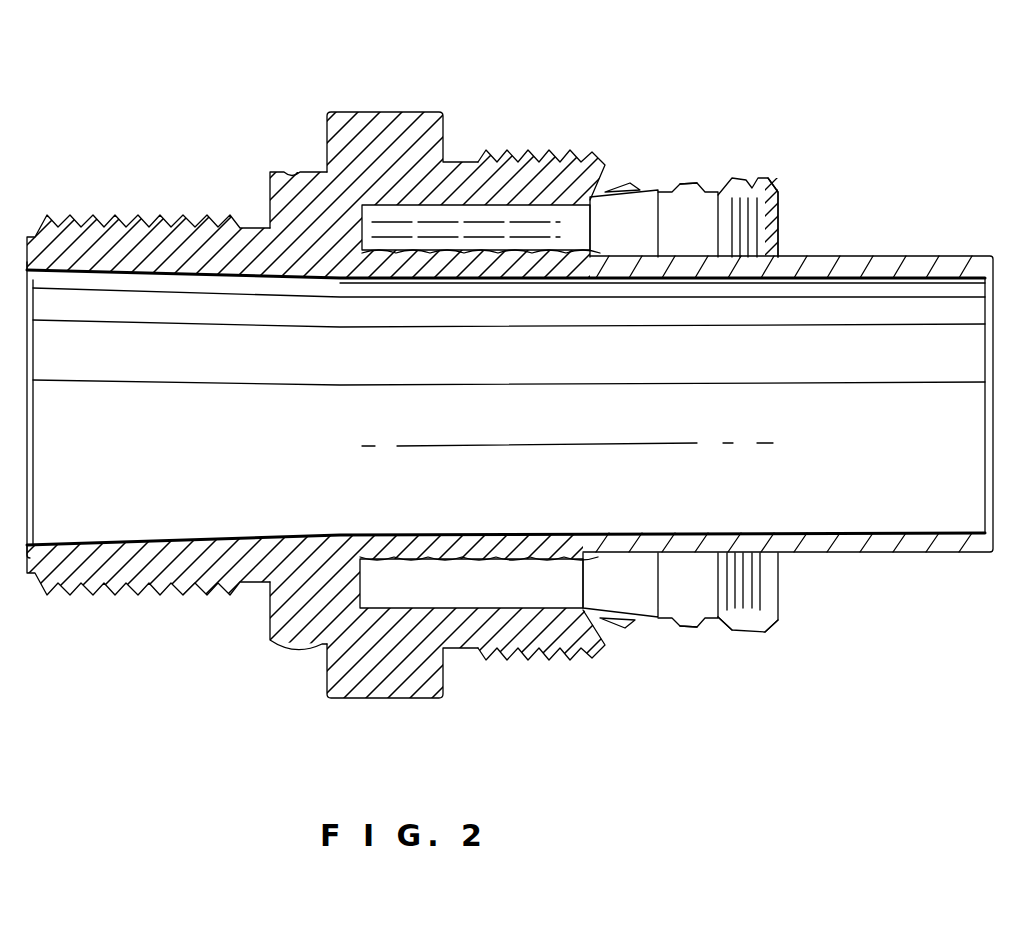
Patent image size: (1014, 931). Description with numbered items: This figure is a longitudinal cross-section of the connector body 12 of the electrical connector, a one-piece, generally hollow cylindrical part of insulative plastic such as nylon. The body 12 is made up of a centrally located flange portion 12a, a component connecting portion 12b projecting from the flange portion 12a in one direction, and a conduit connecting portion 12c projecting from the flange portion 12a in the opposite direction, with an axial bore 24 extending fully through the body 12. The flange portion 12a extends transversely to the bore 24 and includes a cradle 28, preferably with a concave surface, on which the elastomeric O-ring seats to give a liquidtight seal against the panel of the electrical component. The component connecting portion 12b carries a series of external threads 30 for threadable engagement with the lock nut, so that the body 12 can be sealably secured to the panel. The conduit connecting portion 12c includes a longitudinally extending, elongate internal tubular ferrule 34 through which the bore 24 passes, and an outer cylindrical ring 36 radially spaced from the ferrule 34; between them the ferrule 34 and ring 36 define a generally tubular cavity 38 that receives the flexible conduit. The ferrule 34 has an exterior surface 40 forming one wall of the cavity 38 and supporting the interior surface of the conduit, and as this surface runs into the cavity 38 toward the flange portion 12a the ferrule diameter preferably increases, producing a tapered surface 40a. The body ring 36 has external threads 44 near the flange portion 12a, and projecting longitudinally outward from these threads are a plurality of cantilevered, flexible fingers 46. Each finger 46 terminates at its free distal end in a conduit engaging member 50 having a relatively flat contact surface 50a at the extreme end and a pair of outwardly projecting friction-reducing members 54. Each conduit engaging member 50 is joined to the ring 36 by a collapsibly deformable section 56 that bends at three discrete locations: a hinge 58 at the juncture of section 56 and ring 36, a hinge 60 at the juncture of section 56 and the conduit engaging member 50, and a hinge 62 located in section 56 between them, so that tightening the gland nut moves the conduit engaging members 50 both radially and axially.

The connector body 12 is at (502, 93).
The flange portion 12a is at (410, 101).
The component connecting portion 12b is at (155, 207).
The conduit connecting portion 12c is at (610, 142).
The axial bore 24 is at (946, 502).
The cradle 28 is at (297, 170).
The external threads 30 is at (91, 600).
The tubular ferrule 34 is at (835, 255).
The outer cylindrical ring 36 is at (455, 642).
The tubular cavity 38 is at (480, 602).
The exterior surface 40 is at (617, 252).
The tapered surface 40a is at (463, 252).
The external threads 44 is at (530, 656).
The flexible fingers 46 is at (683, 630).
The conduit engaging member 50 is at (742, 633).
The contact surface 50a is at (779, 190).
The friction-reducing members 54 is at (763, 628).
The collapsibly deformable section 56 is at (712, 208).
The hinge 58 is at (614, 187).
The hinge 60 is at (708, 188).
The hinge 62 is at (657, 188).